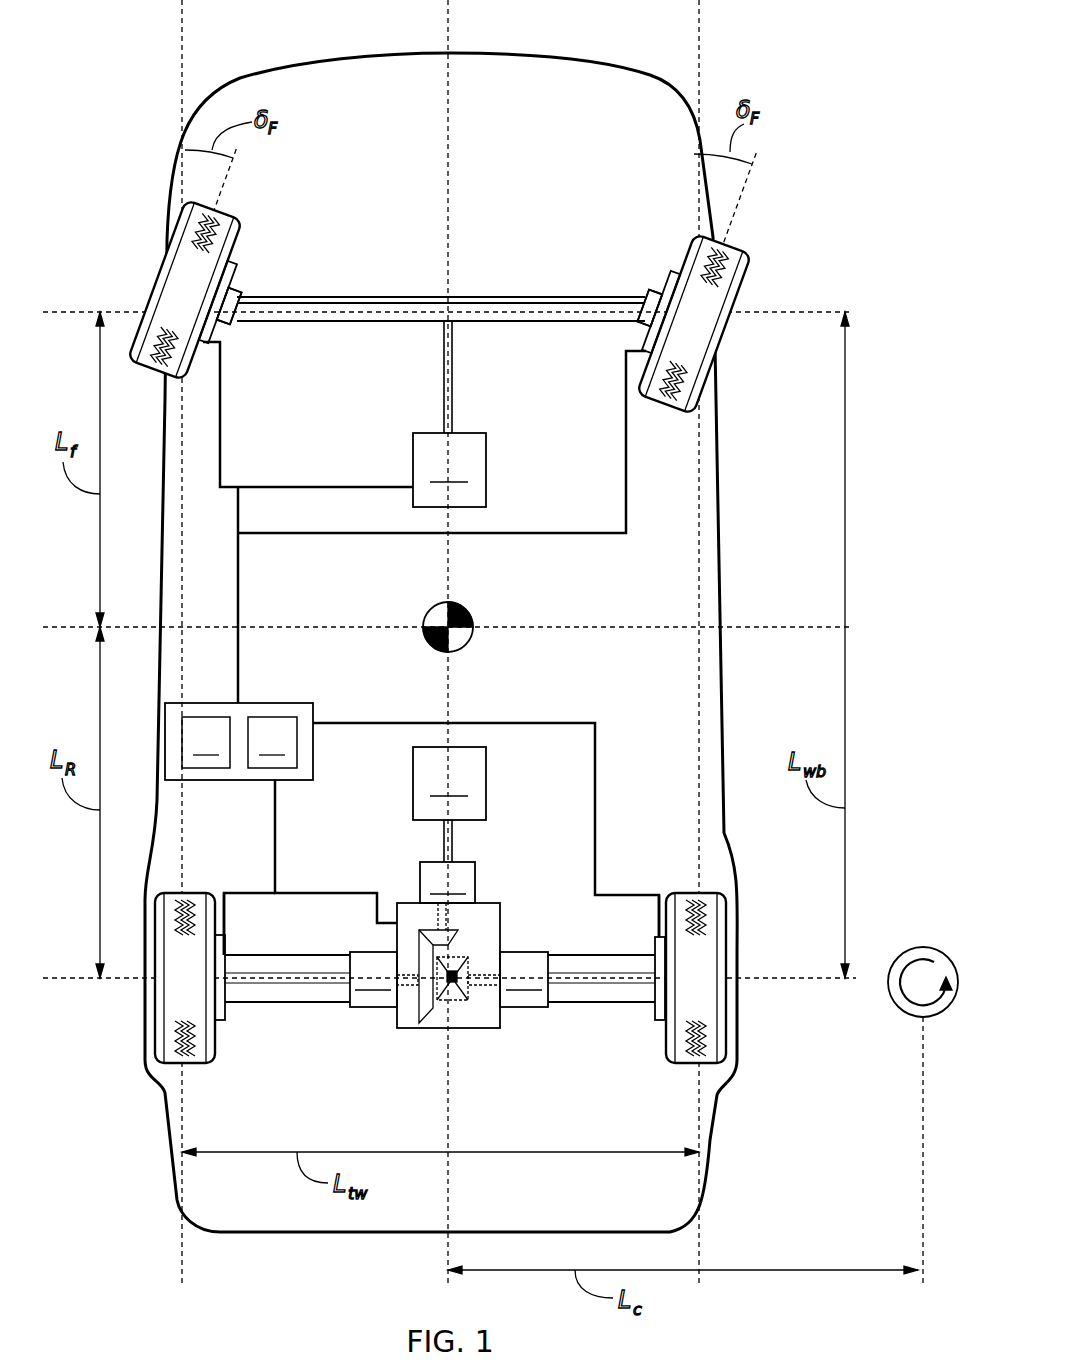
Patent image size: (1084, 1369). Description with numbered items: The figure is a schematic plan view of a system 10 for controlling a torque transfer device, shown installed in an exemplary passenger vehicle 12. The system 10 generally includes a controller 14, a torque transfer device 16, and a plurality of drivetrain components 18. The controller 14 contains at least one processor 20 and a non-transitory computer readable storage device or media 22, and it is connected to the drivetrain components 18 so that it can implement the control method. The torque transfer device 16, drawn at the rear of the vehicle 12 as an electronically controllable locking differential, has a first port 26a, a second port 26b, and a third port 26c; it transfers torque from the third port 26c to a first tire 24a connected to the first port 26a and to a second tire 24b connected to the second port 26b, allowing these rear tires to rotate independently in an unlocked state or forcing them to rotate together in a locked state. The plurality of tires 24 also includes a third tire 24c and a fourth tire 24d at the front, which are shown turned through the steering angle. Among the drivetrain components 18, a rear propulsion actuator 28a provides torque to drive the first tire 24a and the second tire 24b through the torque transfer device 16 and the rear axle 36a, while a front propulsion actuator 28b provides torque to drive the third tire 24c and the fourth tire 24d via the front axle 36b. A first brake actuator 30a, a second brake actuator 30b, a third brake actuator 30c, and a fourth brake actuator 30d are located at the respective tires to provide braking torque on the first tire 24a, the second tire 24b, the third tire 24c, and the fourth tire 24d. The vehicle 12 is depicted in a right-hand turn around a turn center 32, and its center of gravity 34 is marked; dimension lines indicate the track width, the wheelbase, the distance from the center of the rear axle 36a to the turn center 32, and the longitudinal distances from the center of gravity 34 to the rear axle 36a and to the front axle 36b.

The system for controlling a torque transfer device 10 is at (785, 108).
The vehicle 12 is at (721, 565).
The controller 14 is at (313, 703).
The torque transfer device 16 is at (468, 1030).
The drivetrain components 18 is at (222, 338).
The processor 20 is at (206, 742).
The non-transitory computer readable storage device or media 22 is at (272, 742).
The tires 24 is at (467, 624).
The first tire 24a is at (170, 1064).
The second tire 24b is at (715, 1064).
The third tire 24c is at (140, 366).
The fourth tire 24d is at (645, 400).
The first port 26a is at (373, 979).
The second port 26b is at (524, 979).
The third port 26c is at (447, 882).
The rear propulsion actuator 28a is at (449, 783).
The front propulsion actuator 28b is at (449, 470).
The first brake actuator 30a is at (226, 947).
The second brake actuator 30b is at (655, 948).
The third brake actuator 30c is at (232, 270).
The fourth brake actuator 30d is at (650, 268).
The turn center 32 is at (921, 947).
The center of gravity 34 is at (466, 608).
The rear axle 36a is at (290, 1005).
The front axle 36b is at (330, 323).